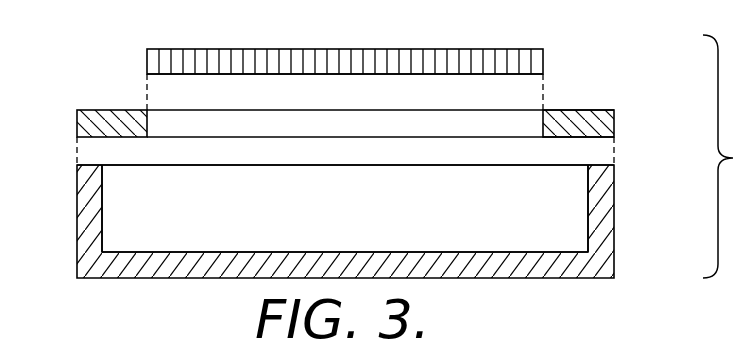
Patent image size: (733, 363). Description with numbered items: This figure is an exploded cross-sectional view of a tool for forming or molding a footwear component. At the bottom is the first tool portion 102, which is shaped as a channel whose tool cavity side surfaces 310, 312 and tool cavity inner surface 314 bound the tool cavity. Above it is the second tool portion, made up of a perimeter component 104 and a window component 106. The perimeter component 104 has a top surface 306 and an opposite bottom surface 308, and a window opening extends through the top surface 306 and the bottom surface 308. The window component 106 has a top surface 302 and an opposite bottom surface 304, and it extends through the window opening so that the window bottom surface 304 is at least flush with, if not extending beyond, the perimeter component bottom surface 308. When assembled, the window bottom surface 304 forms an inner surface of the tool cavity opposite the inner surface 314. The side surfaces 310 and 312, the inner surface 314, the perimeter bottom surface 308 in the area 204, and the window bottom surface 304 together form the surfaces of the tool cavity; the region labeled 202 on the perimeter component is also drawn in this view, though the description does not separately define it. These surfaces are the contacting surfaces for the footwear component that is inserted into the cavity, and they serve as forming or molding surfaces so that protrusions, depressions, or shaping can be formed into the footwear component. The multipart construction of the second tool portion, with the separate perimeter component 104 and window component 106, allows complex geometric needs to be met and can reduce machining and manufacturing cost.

The first tool portion 102 is at (76, 233).
The perimeter component 104 is at (99, 109).
The window component 106 is at (223, 48).
The cover frame blocks 202 is at (105, 141).
The area 204 is at (142, 141).
The top surface 302 is at (472, 48).
The bottom surface 304 is at (478, 76).
The top surface 306 is at (558, 109).
The bottom surface 308 is at (552, 139).
The tool cavity side surface 310 is at (104, 229).
The tool cavity side surface 312 is at (587, 212).
The tool cavity inner surface 314 is at (262, 251).